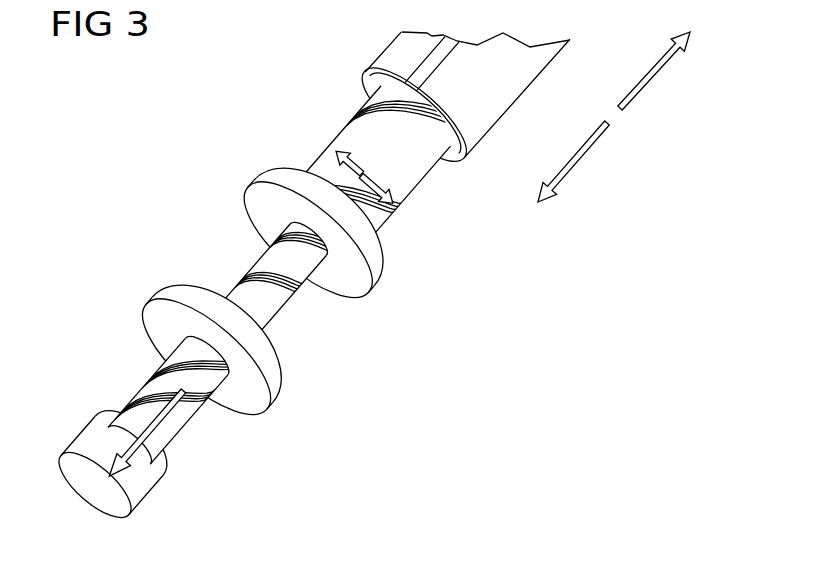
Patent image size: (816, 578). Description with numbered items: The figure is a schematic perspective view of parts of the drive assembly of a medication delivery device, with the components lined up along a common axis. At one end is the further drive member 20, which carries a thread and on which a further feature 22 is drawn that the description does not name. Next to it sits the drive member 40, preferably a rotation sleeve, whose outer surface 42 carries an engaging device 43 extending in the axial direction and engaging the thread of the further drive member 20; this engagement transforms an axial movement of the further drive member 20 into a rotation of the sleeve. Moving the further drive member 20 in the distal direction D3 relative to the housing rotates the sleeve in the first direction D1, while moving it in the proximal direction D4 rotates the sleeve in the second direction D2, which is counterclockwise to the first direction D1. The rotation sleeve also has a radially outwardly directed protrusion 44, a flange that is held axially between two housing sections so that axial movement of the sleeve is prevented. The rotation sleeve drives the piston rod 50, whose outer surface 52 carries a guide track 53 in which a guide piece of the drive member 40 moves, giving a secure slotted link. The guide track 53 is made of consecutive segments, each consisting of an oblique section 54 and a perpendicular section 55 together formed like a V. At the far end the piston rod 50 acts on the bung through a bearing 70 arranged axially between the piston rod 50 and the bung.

The further drive member 20 is at (517, 92).
The slot 22 is at (425, 63).
The drive member 40 is at (420, 167).
The outer surface 42 is at (340, 140).
The engaging device 43 is at (368, 97).
The protrusion 44 is at (370, 268).
The piston rod 50 is at (303, 270).
The outer surface 52 is at (265, 252).
The guide track 53 is at (213, 392).
The oblique section 54 is at (143, 397).
The perpendicular section 55 is at (167, 362).
The bearing 70 is at (140, 483).
The first direction D1 is at (387, 185).
The second direction D2 is at (330, 154).
The distal direction D3 is at (583, 153).
The proximal direction D4 is at (658, 72).